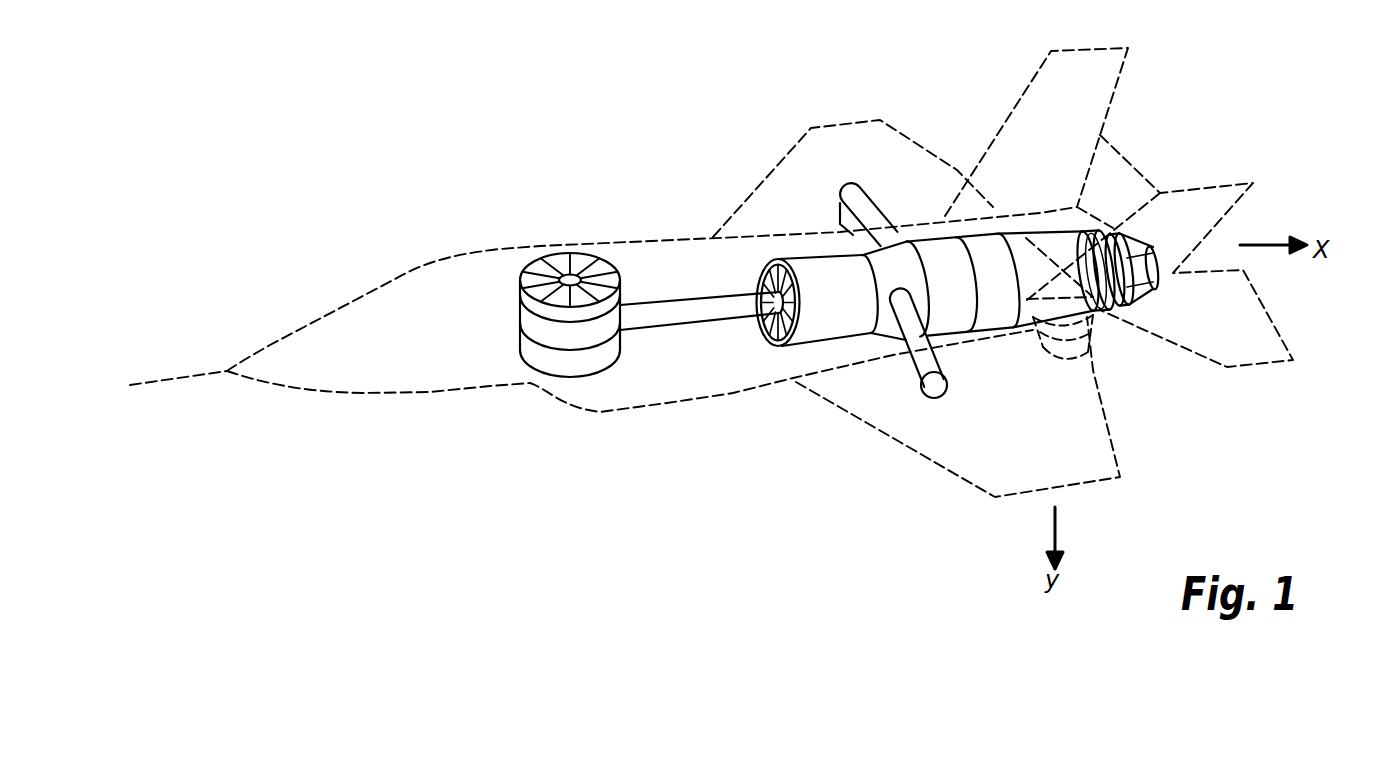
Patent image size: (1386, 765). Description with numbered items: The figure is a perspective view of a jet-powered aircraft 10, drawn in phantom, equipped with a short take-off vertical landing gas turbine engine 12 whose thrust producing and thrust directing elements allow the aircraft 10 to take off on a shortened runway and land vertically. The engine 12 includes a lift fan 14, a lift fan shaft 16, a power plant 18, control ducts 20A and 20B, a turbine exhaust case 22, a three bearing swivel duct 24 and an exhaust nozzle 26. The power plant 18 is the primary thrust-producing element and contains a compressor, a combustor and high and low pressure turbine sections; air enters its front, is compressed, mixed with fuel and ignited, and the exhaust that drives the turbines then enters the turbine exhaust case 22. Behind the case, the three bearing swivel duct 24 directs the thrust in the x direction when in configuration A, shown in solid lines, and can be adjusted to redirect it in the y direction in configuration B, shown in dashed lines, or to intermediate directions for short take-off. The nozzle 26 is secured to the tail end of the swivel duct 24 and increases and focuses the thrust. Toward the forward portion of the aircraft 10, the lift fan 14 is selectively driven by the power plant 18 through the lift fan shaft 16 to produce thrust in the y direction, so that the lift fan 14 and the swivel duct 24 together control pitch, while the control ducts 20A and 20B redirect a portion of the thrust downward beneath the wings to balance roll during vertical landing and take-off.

The jet-powered aircraft 10 is at (436, 290).
The gas turbine engine 12 is at (727, 268).
The lift fan 14 is at (528, 328).
The lift fan shaft 16 is at (709, 311).
The power plant 18 is at (840, 283).
The control duct 20A is at (915, 338).
The control duct 20B is at (860, 210).
The turbine exhaust case 22 is at (987, 253).
The three bearing swivel duct 24 is at (1032, 262).
The exhaust nozzle 26 is at (1150, 250).
The configuration A is at (1150, 283).
The configuration B is at (1087, 337).